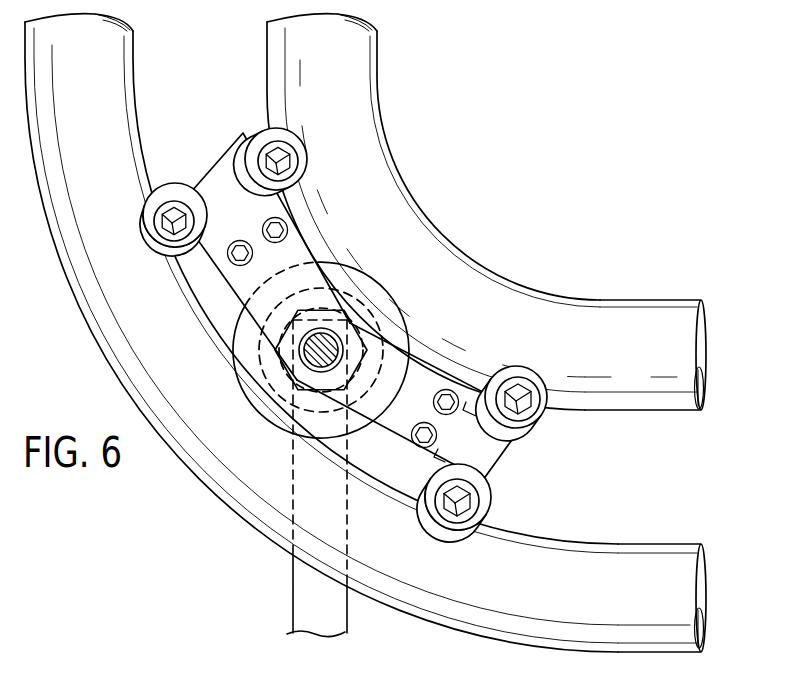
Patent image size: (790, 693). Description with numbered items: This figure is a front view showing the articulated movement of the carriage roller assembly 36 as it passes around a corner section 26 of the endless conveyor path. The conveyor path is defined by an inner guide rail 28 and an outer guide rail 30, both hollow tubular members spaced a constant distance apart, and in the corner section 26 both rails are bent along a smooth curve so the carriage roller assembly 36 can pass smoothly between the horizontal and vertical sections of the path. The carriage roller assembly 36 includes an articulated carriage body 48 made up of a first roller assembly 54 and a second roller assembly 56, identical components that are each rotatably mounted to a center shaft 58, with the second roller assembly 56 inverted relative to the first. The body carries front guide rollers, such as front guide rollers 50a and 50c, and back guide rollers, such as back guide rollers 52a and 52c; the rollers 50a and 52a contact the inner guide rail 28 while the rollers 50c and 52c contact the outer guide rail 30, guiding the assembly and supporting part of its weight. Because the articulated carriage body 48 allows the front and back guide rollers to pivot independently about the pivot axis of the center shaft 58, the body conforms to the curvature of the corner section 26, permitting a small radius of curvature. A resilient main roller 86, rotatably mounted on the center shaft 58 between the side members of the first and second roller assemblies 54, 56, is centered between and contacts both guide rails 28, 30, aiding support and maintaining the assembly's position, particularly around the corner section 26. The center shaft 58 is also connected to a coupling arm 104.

The corner section 26 is at (170, 489).
The inner guide rail 28 is at (659, 328).
The outer guide rail 30 is at (665, 573).
The carriage roller assembly 36 is at (426, 300).
The articulated carriage body 48 is at (330, 244).
The front guide roller 50a is at (544, 416).
The front guide roller 50c is at (491, 494).
The back guide roller 52a is at (248, 140).
The back guide roller 52c is at (172, 186).
The first roller assembly 54 is at (430, 388).
The second roller assembly 56 is at (294, 248).
The center shaft 58 is at (341, 336).
The main roller 86 is at (255, 380).
The coupling arm 104 is at (300, 612).